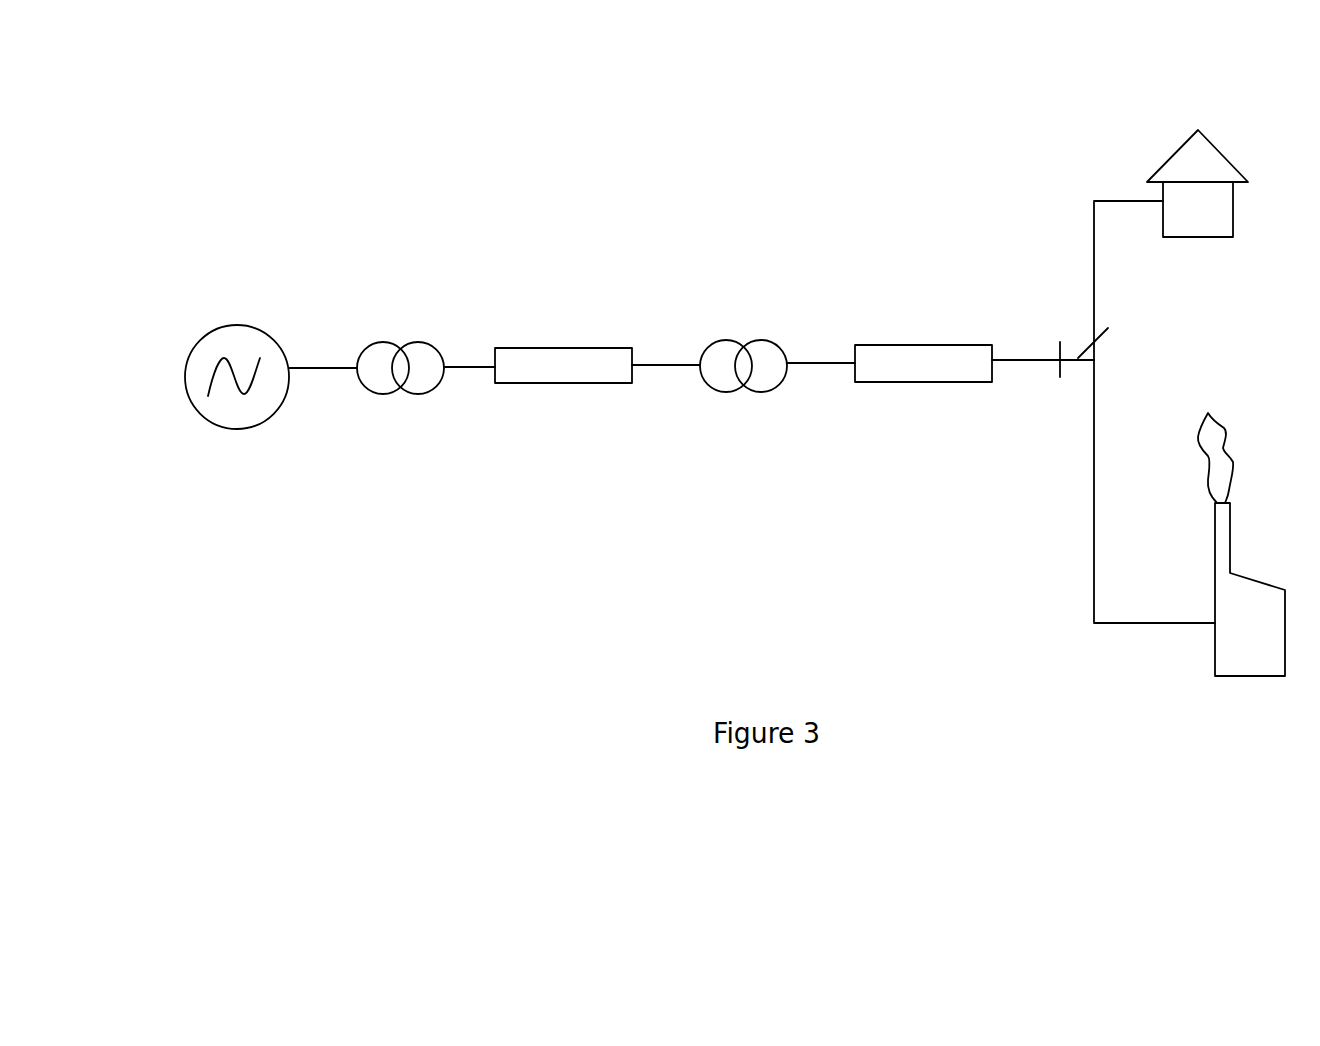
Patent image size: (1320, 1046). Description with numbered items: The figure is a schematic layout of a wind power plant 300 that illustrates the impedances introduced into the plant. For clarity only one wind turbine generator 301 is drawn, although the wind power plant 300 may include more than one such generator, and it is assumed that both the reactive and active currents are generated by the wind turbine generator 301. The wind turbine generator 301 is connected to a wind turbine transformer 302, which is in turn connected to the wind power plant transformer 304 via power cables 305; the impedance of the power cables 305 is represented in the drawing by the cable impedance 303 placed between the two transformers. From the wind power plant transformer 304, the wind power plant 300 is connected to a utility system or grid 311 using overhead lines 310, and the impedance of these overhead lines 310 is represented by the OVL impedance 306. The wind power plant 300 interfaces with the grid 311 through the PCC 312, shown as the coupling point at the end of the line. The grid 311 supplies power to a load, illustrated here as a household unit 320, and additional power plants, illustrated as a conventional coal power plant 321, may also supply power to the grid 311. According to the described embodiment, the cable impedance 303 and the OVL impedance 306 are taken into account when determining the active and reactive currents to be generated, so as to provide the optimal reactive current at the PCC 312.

The wind power plant 300 is at (717, 148).
The wind turbine generator 301 is at (241, 323).
The wind turbine transformer 302 is at (393, 341).
The cable impedance 303 is at (582, 347).
The wind power plant transformer 304 is at (735, 340).
The power cables 305 is at (652, 364).
The OVL impedance 306 is at (907, 345).
The overhead lines 310 is at (1022, 359).
The grid 311 is at (1108, 329).
The PCC 312 is at (1057, 360).
The household unit 320 is at (1213, 220).
The conventional coal power plant 321 is at (1265, 642).